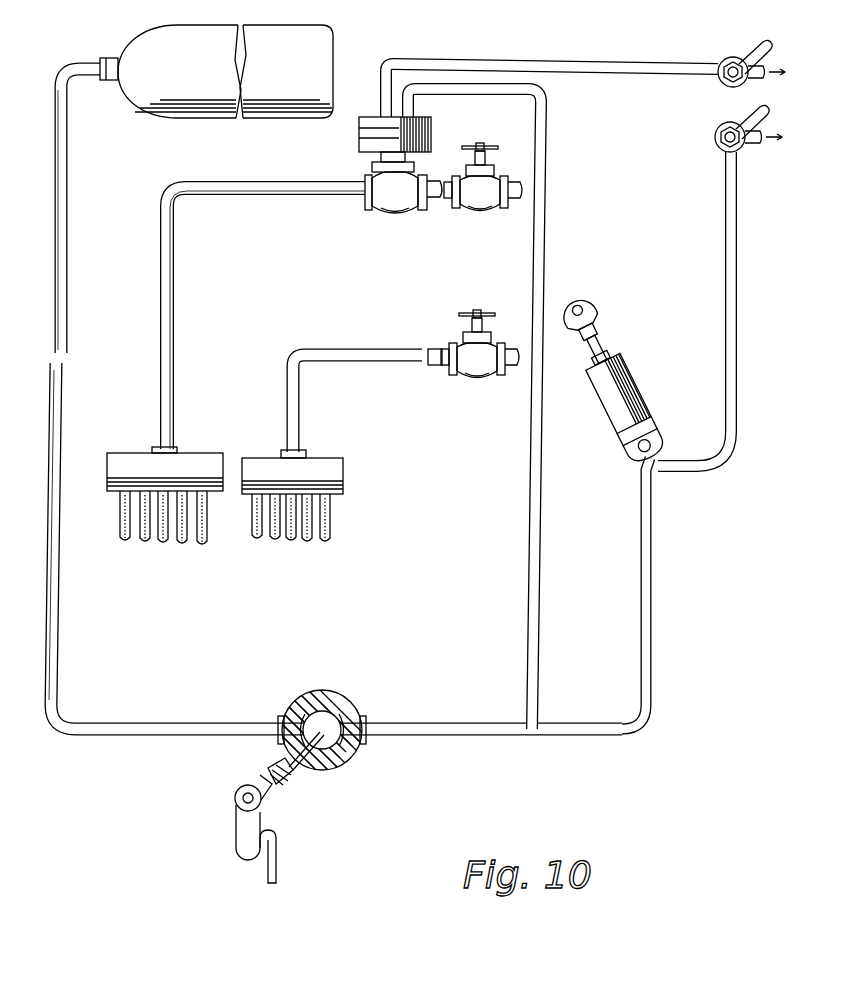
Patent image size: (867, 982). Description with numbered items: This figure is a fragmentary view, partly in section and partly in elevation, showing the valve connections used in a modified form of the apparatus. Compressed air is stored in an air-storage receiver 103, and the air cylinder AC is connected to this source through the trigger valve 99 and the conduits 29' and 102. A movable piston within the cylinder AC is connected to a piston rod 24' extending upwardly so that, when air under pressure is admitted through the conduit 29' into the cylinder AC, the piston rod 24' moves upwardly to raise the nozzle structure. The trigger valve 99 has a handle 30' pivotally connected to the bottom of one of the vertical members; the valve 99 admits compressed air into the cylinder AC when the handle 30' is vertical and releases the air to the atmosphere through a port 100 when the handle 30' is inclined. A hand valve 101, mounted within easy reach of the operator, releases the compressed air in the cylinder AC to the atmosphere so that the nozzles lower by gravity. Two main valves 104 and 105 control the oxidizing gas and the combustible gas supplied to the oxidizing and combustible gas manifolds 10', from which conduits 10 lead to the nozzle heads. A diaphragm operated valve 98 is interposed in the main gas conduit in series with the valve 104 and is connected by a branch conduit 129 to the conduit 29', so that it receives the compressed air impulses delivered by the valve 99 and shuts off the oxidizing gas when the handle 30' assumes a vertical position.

The air-storage receiver 103 is at (296, 26).
The diaphragm operated valve 98 is at (393, 214).
The main oxidizing gas valve 104 is at (458, 210).
The main combustible gas valve 105 is at (478, 370).
The hand valve 101 is at (718, 135).
The piston rod 24' is at (599, 320).
The air cylinder AC is at (610, 428).
The branch conduit 129 is at (527, 530).
The conduit 29' is at (617, 593).
The conduit 102 is at (174, 724).
The trigger valve 99 is at (328, 712).
The port 100 is at (280, 766).
The handle 30' is at (279, 829).
The gas manifolds 10' is at (225, 458).
The conduits 10 is at (225, 533).